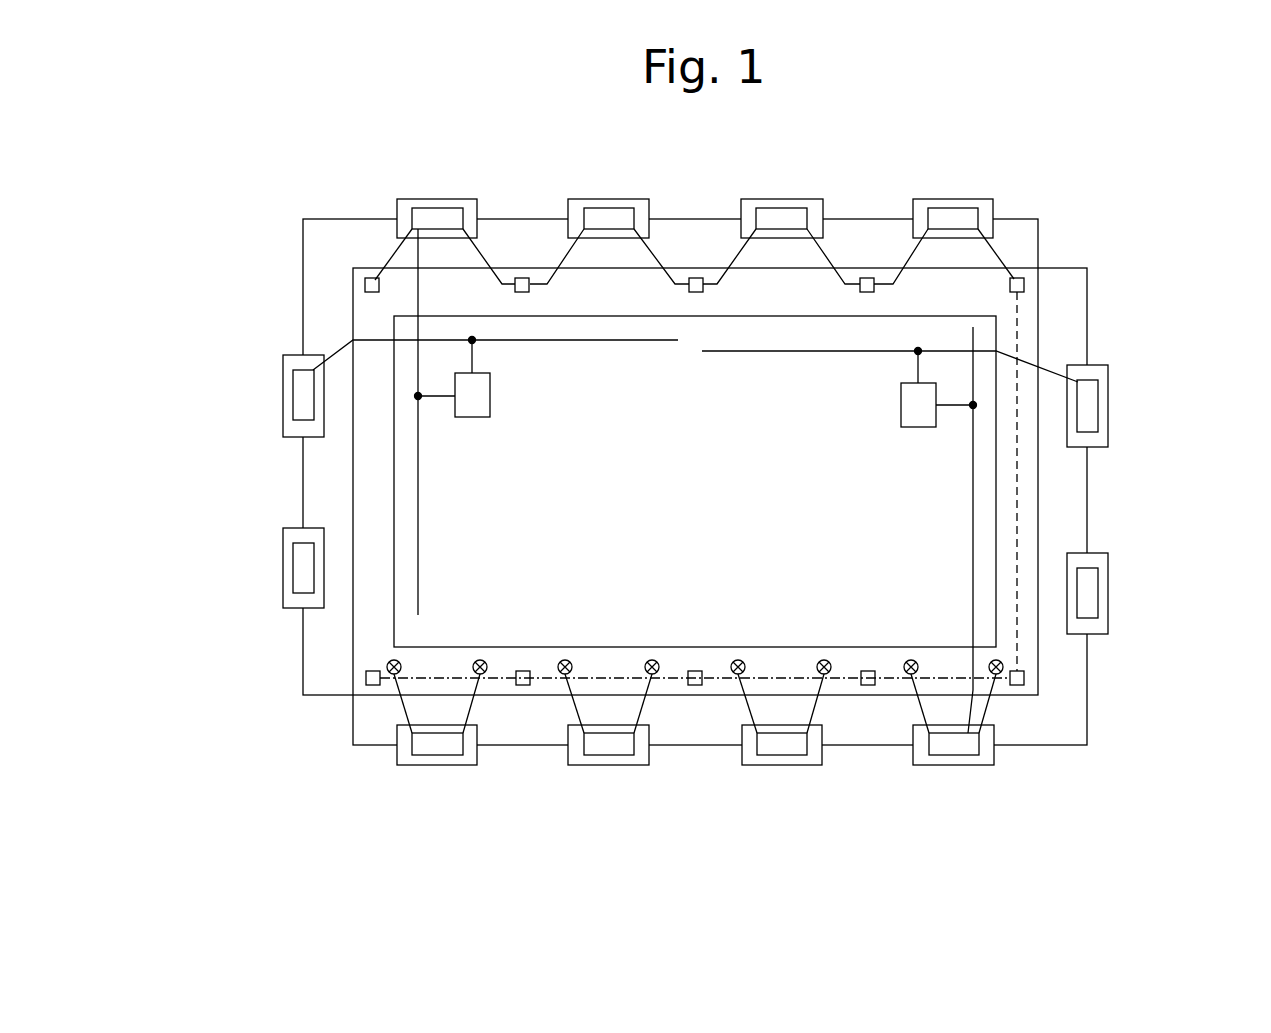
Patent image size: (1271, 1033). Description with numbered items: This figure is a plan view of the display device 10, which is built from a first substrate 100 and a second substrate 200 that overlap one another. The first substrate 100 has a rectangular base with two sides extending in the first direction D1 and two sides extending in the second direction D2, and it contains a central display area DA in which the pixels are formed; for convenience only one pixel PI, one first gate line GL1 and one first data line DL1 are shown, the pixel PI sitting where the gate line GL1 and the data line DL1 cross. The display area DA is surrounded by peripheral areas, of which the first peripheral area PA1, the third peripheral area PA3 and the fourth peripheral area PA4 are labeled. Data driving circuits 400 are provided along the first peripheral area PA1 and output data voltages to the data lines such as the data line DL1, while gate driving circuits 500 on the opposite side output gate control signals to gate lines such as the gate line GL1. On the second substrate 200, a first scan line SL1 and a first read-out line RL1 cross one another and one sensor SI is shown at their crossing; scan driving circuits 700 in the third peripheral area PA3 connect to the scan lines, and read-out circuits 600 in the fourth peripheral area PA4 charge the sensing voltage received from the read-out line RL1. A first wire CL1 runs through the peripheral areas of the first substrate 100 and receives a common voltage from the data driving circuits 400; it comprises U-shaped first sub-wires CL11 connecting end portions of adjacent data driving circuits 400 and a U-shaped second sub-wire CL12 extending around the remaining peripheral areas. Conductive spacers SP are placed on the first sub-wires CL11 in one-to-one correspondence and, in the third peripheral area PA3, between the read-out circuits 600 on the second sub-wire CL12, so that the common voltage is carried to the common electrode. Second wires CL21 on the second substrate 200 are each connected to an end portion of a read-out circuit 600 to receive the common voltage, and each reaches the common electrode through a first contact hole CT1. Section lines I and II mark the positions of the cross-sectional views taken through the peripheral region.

The display device 10 is at (1175, 138).
The first substrate 100 is at (1022, 216).
The second substrate 200 is at (1092, 300).
The data driving circuit 400 is at (953, 206).
The gate driving circuit 500 is at (283, 395).
The read-out circuit 600 is at (437, 757).
The scan driving circuit 700 is at (1108, 405).
The display area DA is at (1000, 468).
The first peripheral area PA1 is at (736, 300).
The third peripheral area PA3 is at (720, 660).
The fourth peripheral area PA4 is at (1027, 522).
The first wire CL1 is at (1205, 214).
The first sub-wire CL11 is at (1000, 252).
The second sub-wire CL12 is at (1020, 308).
The second wire CL21 is at (987, 710).
The first contact hole CT1 is at (833, 672).
The first data line DL1 is at (422, 540).
The first gate line GL1 is at (352, 318).
The first scan line SL1 is at (985, 347).
The first read-out line RL1 is at (975, 493).
The pixel PI is at (453, 377).
The sensor SI is at (939, 388).
The conductive spacer SP is at (375, 695).
The section line I-I' I is at (373, 330).
The section line II is at (525, 665).
The first direction D1 is at (197, 788).
The second direction D2 is at (197, 788).